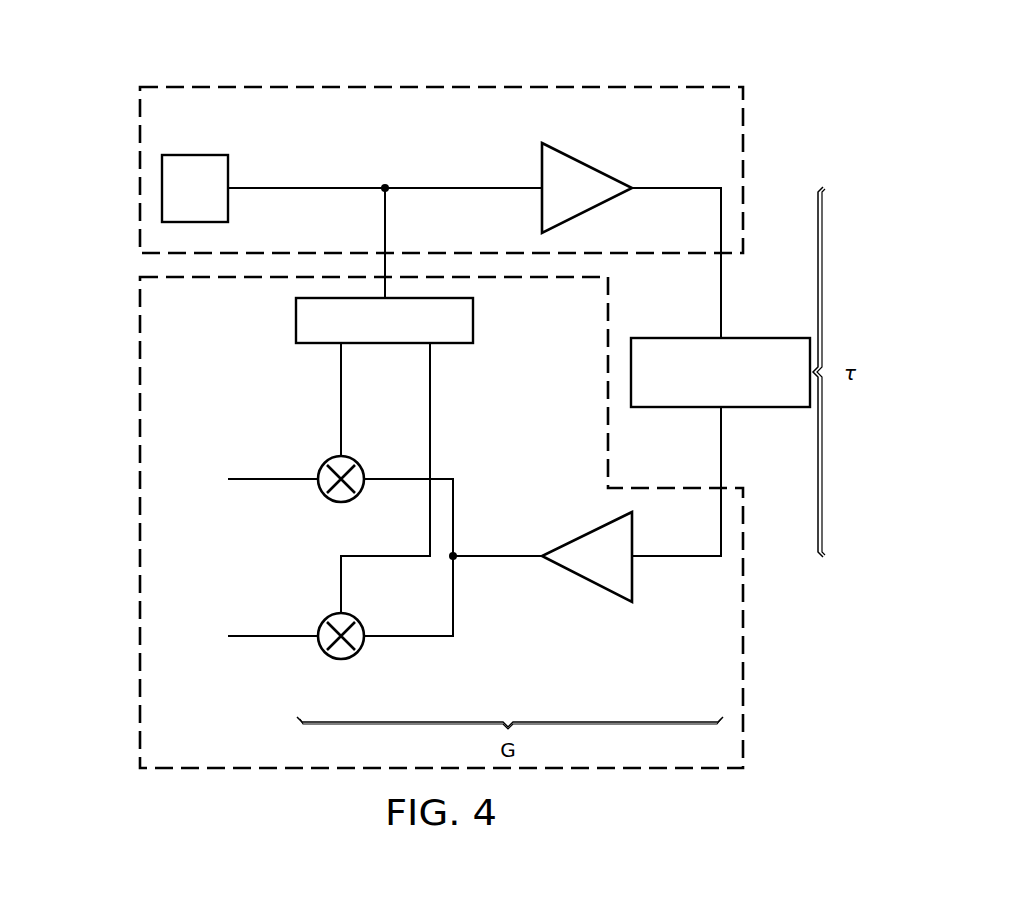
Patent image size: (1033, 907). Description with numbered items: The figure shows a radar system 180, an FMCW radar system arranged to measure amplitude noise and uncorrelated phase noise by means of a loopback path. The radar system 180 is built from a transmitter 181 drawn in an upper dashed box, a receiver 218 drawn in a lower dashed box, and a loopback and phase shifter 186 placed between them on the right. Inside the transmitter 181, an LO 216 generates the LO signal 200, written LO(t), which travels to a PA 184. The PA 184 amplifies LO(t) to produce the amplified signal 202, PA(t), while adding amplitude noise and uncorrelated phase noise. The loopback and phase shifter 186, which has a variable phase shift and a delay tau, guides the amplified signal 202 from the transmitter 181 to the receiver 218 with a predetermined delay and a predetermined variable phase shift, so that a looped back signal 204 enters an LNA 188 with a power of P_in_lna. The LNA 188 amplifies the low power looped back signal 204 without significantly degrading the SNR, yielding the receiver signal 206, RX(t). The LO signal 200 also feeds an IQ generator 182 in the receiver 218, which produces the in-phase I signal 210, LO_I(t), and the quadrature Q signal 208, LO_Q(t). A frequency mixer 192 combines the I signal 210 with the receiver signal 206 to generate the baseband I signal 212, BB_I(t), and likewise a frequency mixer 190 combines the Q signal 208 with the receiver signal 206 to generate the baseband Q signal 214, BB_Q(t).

The radar system 180 is at (800, 64).
The transmitter 181 is at (332, 85).
The receiver 218 is at (136, 631).
The LO 216 is at (194, 154).
The LO signal 200 is at (463, 186).
The PA 184 is at (589, 167).
The amplified signal 202 is at (723, 302).
The loopback and phase shifter 186 is at (688, 337).
The looped back signal 204 is at (723, 450).
The LNA 188 is at (581, 582).
The receiver signal 206 is at (500, 562).
The IQ generator 182 is at (294, 322).
The I signal 210 is at (339, 400).
The Q signal 208 is at (432, 447).
The frequency mixer 192 is at (331, 500).
The frequency mixer 190 is at (331, 657).
The baseband I signal 212 is at (276, 484).
The baseband Q signal 214 is at (276, 641).